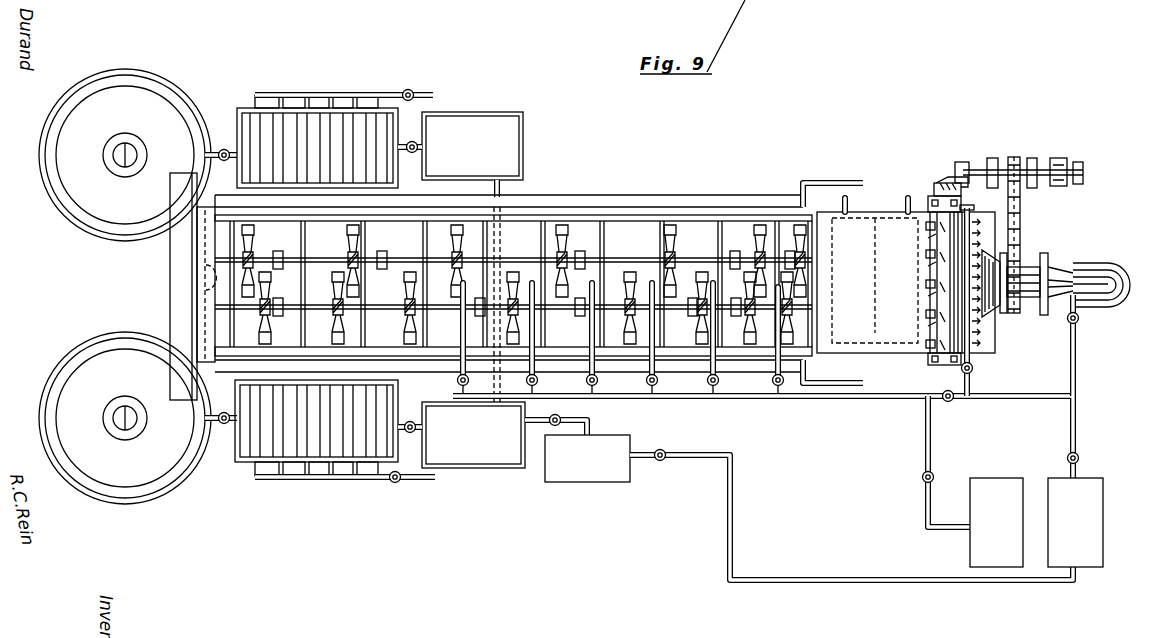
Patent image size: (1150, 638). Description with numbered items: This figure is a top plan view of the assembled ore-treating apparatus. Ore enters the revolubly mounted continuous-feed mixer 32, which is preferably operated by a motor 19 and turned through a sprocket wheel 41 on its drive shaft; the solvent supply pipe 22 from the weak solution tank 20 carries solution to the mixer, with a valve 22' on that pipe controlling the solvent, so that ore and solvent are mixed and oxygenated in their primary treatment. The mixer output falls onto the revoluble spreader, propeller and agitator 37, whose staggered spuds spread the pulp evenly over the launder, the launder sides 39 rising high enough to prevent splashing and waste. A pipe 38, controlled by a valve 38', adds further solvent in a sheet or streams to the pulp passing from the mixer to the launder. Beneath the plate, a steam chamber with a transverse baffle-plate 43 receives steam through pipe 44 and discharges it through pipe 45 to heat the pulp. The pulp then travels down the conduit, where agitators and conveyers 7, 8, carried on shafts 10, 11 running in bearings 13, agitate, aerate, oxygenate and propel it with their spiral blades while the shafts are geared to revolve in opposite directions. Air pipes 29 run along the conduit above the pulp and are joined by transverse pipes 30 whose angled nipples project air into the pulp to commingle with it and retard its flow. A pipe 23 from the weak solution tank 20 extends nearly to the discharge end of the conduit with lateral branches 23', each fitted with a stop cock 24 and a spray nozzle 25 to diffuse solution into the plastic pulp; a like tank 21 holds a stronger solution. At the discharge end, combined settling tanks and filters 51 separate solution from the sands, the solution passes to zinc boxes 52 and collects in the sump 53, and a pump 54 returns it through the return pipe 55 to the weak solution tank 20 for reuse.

The agitator and conveyer 7 is at (568, 262).
The agitator and conveyer 8 is at (374, 308).
The agitator shaft 10 is at (704, 275).
The agitator shaft 11 is at (668, 316).
The bearing 13 is at (262, 255).
The motor 19 is at (1058, 160).
The weak solution tank 20 is at (1058, 482).
The strong solution tank 21 is at (996, 510).
The solvent supply pipe 22 is at (1101, 318).
The hose valve 22' is at (1091, 326).
The solution pipe 23 is at (780, 435).
The lateral branch 23' is at (621, 339).
The stop cock 24 is at (652, 392).
The spray nozzle 25 is at (540, 286).
The air pipe 29 is at (372, 225).
The transverse pipe 30 is at (425, 232).
The continuous-feed mixer 32 is at (1028, 262).
The revoluble spreader, propeller and agitator 37 is at (925, 195).
The solvent pipe 38 is at (1001, 300).
The valve 38' is at (987, 376).
The launder side 39 is at (878, 357).
The sprocket wheel 41 is at (1021, 208).
The baffle-plate 43 is at (878, 278).
The steam supply pipe 44 is at (910, 196).
The steam discharge pipe 45 is at (848, 196).
The combined settling tank and filter 51 is at (135, 65).
The zinc box 52 is at (325, 100).
The sump 53 is at (524, 140).
The pump 54 is at (575, 482).
The return pipe 55 is at (863, 584).